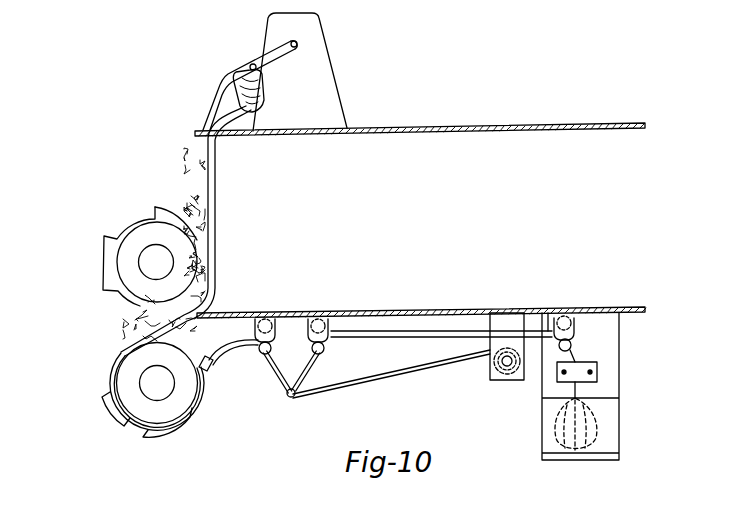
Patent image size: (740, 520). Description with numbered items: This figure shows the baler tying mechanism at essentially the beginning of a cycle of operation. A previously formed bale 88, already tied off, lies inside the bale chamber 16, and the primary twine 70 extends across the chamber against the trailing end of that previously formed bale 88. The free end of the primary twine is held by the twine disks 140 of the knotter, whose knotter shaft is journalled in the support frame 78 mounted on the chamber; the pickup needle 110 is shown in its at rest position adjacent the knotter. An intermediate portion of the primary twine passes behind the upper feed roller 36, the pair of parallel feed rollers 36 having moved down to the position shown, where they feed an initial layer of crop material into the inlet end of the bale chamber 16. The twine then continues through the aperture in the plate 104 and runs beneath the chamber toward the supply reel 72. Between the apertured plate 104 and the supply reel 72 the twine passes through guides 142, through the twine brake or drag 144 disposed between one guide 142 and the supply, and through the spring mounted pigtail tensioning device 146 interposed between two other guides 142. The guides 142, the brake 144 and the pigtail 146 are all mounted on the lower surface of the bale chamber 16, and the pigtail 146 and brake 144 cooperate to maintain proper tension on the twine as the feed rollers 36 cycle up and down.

The bale chamber 16 is at (607, 311).
The feed roller 36 is at (100, 250).
The primary twine 70 is at (216, 186).
The supply reel 72 is at (603, 425).
The support frame 78 is at (318, 25).
The previously formed bale 88 is at (378, 238).
The apertured plate 104 is at (214, 355).
The needle 110 is at (222, 81).
The twine disks 140 is at (270, 106).
The guides 142 is at (266, 356).
The twine brake 144 is at (598, 364).
The pigtail tensioning device 146 is at (292, 398).